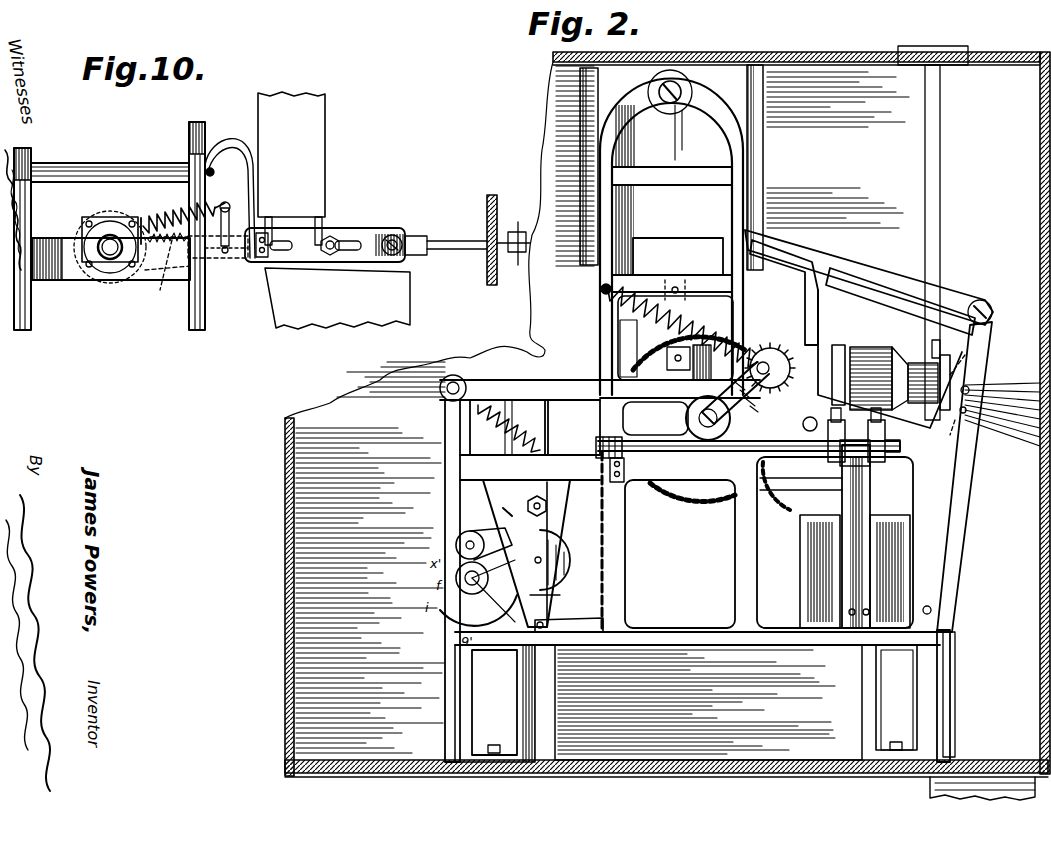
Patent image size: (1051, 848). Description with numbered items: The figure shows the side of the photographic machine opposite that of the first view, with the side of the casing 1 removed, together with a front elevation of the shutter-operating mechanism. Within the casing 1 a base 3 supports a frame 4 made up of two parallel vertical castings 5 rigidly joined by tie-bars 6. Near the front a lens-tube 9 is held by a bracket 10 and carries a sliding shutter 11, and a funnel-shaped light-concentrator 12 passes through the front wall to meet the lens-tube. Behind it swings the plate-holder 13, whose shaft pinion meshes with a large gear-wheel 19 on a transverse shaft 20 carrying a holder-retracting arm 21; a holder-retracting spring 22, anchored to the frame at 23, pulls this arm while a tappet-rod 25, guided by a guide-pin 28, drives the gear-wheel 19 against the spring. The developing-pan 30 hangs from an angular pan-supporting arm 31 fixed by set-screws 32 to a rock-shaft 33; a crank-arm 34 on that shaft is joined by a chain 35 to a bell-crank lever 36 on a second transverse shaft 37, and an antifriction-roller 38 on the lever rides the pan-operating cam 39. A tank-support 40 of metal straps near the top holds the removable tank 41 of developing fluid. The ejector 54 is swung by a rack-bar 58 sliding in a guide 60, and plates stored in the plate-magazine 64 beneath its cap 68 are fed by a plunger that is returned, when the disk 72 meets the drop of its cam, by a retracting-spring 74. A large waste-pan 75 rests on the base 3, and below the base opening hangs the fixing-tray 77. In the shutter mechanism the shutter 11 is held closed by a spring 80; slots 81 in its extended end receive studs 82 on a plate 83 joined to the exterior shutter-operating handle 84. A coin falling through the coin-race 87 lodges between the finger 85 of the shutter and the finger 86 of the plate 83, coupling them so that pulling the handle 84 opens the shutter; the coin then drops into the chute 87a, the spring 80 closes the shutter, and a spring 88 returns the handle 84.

In FIG. 10, the casing 1 is at (455, 232).
In FIG. 2, the casing 1 is at (810, 52).
In FIG. 2, the base 3 is at (440, 760).
In FIG. 10, the frame 4 is at (180, 130).
In FIG. 2, the frame 4 is at (805, 248).
In FIG. 10, the vertical castings 5 is at (31, 152).
In FIG. 2, the vertical castings 5 is at (845, 268).
In FIG. 10, the tie-bars 6 is at (100, 170).
In FIG. 10, the lens-tube 9 is at (110, 217).
In FIG. 2, the lens-tube 9 is at (888, 347).
In FIG. 10, the bracket 10 is at (62, 279).
In FIG. 2, the bracket 10 is at (970, 432).
In FIG. 10, the sliding shutter 11 is at (220, 260).
In FIG. 2, the sliding shutter 11 is at (948, 378).
In FIG. 2, the light-concentrator 12 is at (960, 360).
In FIG. 2, the plate-holder 13 is at (840, 345).
In FIG. 2, the gear-wheel 19 is at (772, 350).
In FIG. 2, the transverse shaft 20 is at (688, 420).
In FIG. 2, the holder-retracting arm 21 is at (742, 395).
In FIG. 2, the holder-retracting spring 22 is at (625, 298).
In FIG. 2, the spring attachment point 23 is at (600, 290).
In FIG. 2, the tappet-rod 25 is at (590, 440).
In FIG. 2, the guide-pin 28 is at (548, 508).
In FIG. 2, the developing-pan 30 is at (905, 560).
In FIG. 2, the pan-supporting arm 31 is at (865, 500).
In FIG. 2, the set-screws 32 is at (840, 412).
In FIG. 2, the rock-shaft 33 is at (648, 452).
In FIG. 2, the crank-arm 34 is at (605, 438).
In FIG. 2, the chain 35 is at (605, 530).
In FIG. 2, the bell-crank lever 36 is at (569, 615).
In FIG. 2, the transverse shaft 37 is at (528, 630).
In FIG. 2, the antifriction-roller 38 is at (468, 531).
In FIG. 2, the pan-operating cam 39 is at (458, 630).
In FIG. 2, the tank-support 40 is at (688, 95).
In FIG. 2, the tank 41 is at (672, 145).
In FIG. 2, the ejector 54 is at (815, 470).
In FIG. 2, the rack-bar 58 is at (682, 575).
In FIG. 2, the guide 60 is at (580, 575).
In FIG. 2, the plate-magazine 64 is at (632, 372).
In FIG. 2, the cap 68 is at (672, 238).
In FIG. 2, the disk 72 is at (565, 548).
In FIG. 2, the retracting-spring 74 is at (507, 427).
In FIG. 2, the waste-pan 75 is at (950, 675).
In FIG. 2, the fixing-tray 77 is at (930, 790).
In FIG. 10, the spring 80 is at (172, 212).
In FIG. 10, the slots 81 is at (283, 252).
In FIG. 10, the studs 82 is at (336, 238).
In FIG. 10, the plate 83 is at (380, 228).
In FIG. 10, the shutter-operating handle 84 is at (518, 258).
In FIG. 10, the finger 85 is at (270, 235).
In FIG. 2, the finger 85 is at (932, 348).
In FIG. 10, the finger 86 is at (322, 225).
In FIG. 10, the coin-race 87 is at (325, 163).
In FIG. 2, the coin-race 87 is at (940, 110).
In FIG. 10, the chute 87a is at (337, 298).
In FIG. 2, the chute 87a is at (905, 498).
In FIG. 10, the spring 88 is at (167, 271).